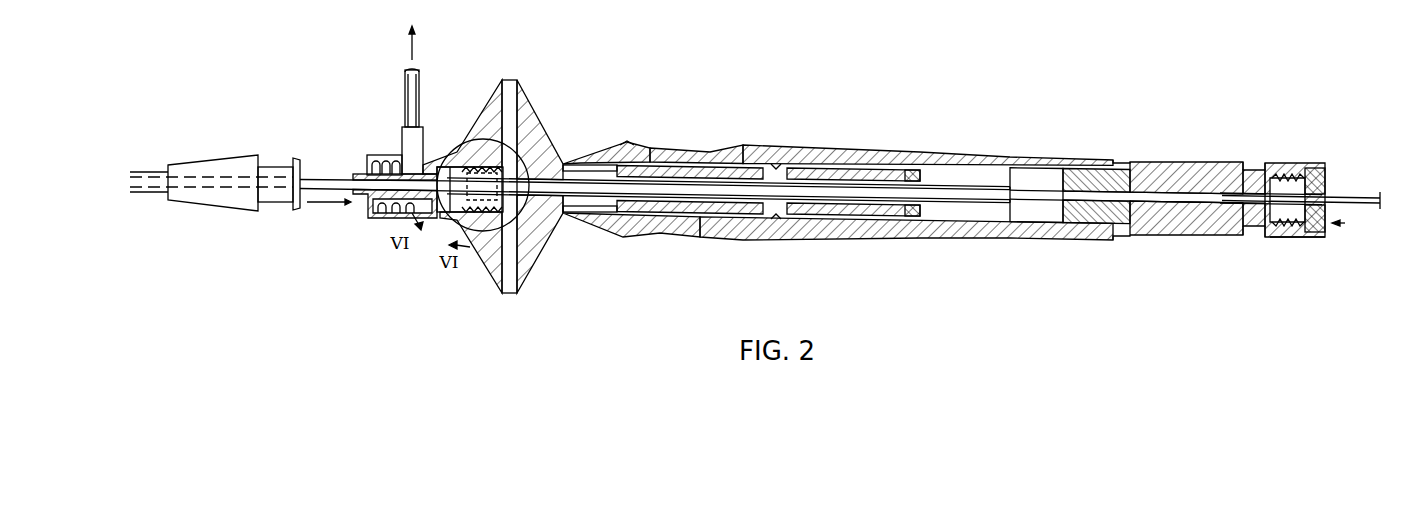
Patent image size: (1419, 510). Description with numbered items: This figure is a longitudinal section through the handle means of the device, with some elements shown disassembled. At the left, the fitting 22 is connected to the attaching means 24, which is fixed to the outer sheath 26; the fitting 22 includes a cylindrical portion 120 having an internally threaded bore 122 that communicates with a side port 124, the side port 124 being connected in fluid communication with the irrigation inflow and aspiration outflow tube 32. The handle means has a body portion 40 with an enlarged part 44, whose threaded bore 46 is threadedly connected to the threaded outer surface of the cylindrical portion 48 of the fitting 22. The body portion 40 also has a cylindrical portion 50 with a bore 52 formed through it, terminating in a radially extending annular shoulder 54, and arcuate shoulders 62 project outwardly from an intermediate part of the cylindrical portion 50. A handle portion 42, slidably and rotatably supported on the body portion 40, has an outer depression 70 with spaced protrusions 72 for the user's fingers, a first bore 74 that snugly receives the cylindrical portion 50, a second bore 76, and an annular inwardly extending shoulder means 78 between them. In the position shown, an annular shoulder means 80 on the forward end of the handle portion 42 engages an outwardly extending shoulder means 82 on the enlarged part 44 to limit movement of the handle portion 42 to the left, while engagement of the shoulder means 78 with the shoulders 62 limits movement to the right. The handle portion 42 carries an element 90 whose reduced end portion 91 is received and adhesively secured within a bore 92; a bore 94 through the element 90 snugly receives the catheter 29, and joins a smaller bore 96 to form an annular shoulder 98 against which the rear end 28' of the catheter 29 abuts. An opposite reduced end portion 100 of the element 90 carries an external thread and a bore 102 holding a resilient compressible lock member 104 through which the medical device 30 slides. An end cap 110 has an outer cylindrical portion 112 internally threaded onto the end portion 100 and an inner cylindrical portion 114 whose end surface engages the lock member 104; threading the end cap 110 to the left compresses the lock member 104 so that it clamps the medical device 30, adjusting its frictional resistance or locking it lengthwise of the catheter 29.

The fitting 22 is at (372, 218).
The attaching means 24 is at (222, 166).
The outer sheath 26 is at (147, 193).
The rear end of the catheter 28' is at (1260, 236).
The catheter 29 is at (1030, 200).
The medical device 30 is at (1357, 195).
The irrigation inflow and aspiration outflow tube 32 is at (405, 80).
The body portion 40 is at (596, 221).
The handle portion 42 is at (752, 222).
The enlarged part 44 is at (525, 95).
The threaded bore 46 is at (448, 148).
The cylindrical portion of the fitting 48 is at (450, 158).
The cylindrical portion of the body portion 50 is at (700, 215).
The bore 52 is at (657, 214).
The annular shoulder 54 is at (912, 218).
The arcuate shoulders 62 is at (800, 165).
The depression 70 is at (745, 148).
The protrusions 72 is at (708, 151).
The first bore 74 is at (595, 165).
The second bore 76 is at (766, 172).
The shoulder means 78 is at (628, 141).
The annular shoulder means 80 is at (553, 165).
The shoulder means 82 is at (540, 216).
The element 90 is at (1168, 170).
The reduced end portion 91 is at (1100, 240).
The bore 92 is at (1025, 173).
The bore 94 is at (1110, 190).
The smaller bore 96 is at (1213, 207).
The annular shoulder 98 is at (1247, 184).
The reduced end portion 100 is at (1258, 227).
The bore 102 is at (1287, 222).
The lock member 104 is at (1255, 175).
The end cap 110 is at (1345, 223).
The outer cylindrical portion 112 is at (1285, 162).
The inner cylindrical portion 114 is at (1306, 166).
The cylindrical portion 120 is at (384, 155).
The internally threaded bore 122 is at (367, 200).
The side port 124 is at (405, 130).